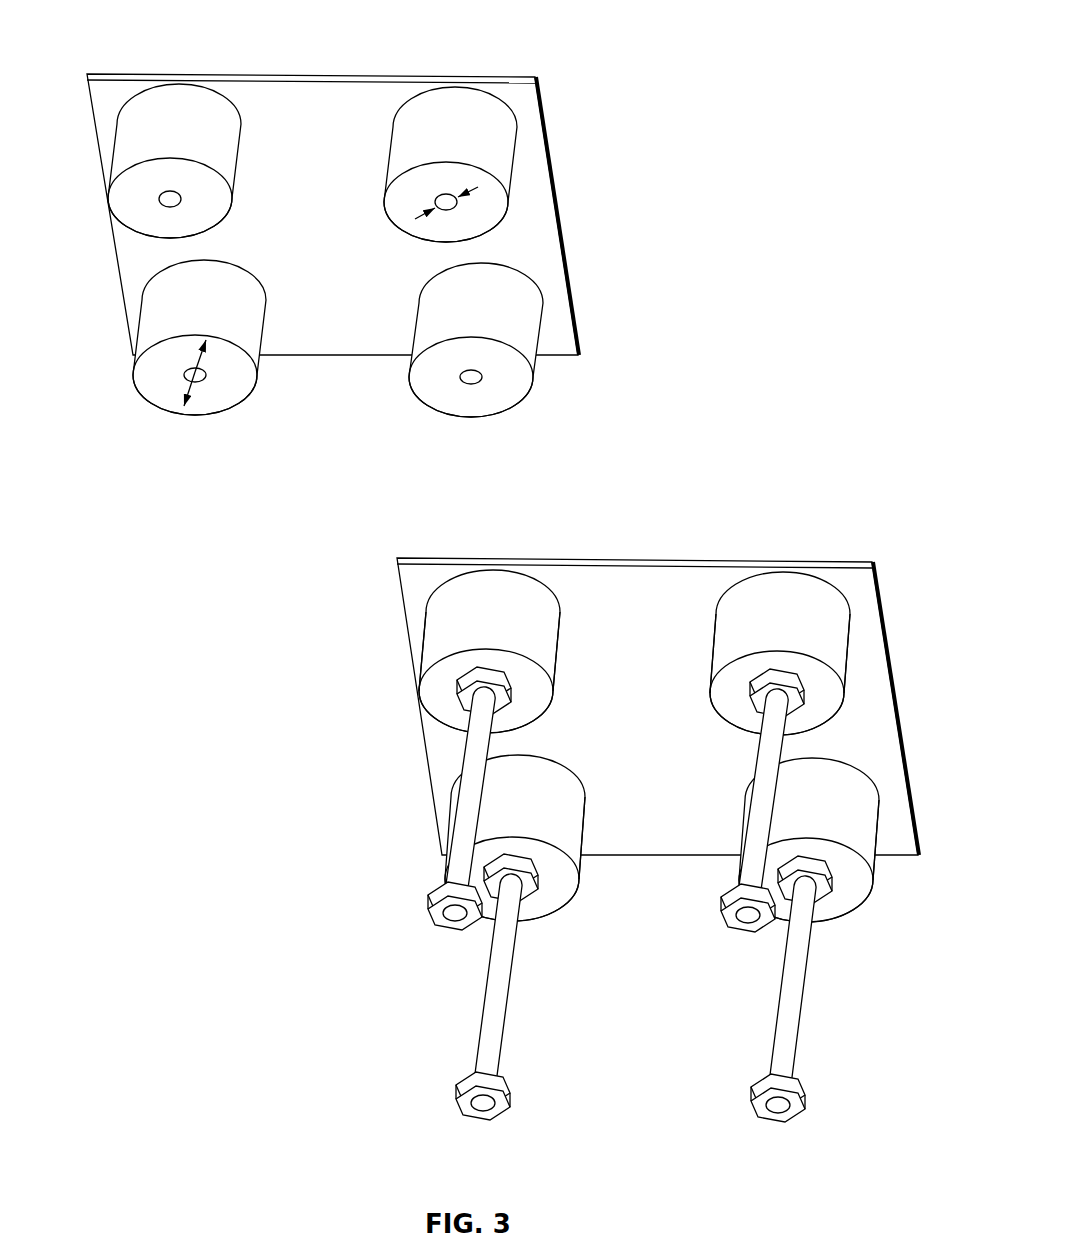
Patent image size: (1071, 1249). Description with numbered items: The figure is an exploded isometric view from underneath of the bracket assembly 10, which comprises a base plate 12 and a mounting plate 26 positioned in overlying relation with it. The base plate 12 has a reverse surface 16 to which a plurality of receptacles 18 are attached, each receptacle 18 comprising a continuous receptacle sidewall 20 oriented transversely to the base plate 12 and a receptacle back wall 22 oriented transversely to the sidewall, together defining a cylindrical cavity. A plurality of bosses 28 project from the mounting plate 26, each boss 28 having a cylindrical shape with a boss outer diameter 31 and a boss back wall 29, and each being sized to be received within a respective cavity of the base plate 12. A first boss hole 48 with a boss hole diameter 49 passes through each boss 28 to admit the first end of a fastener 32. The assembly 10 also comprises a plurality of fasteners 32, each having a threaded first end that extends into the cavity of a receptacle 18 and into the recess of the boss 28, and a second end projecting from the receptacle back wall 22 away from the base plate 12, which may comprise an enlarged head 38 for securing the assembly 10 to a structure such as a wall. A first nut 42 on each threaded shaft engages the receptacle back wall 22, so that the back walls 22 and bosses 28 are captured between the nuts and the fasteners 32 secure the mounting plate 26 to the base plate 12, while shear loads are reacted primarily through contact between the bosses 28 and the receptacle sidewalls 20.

The bracket assembly 10 is at (117, 42).
The mounting plate 26 is at (347, 102).
The boss 28 is at (490, 152).
The boss back wall 29 is at (491, 201).
The first boss hole 48 is at (168, 207).
The boss hole diameter 49 is at (420, 222).
The boss outer diameter 31 is at (190, 402).
The base plate 12 is at (653, 592).
The reverse surface 16 is at (438, 753).
The receptacle 18 is at (455, 615).
The receptacle sidewall 20 is at (442, 647).
The receptacle back wall 22 is at (442, 700).
The first nut 42 is at (500, 713).
The fastener 32 is at (505, 966).
The enlarged head 38 is at (455, 1085).